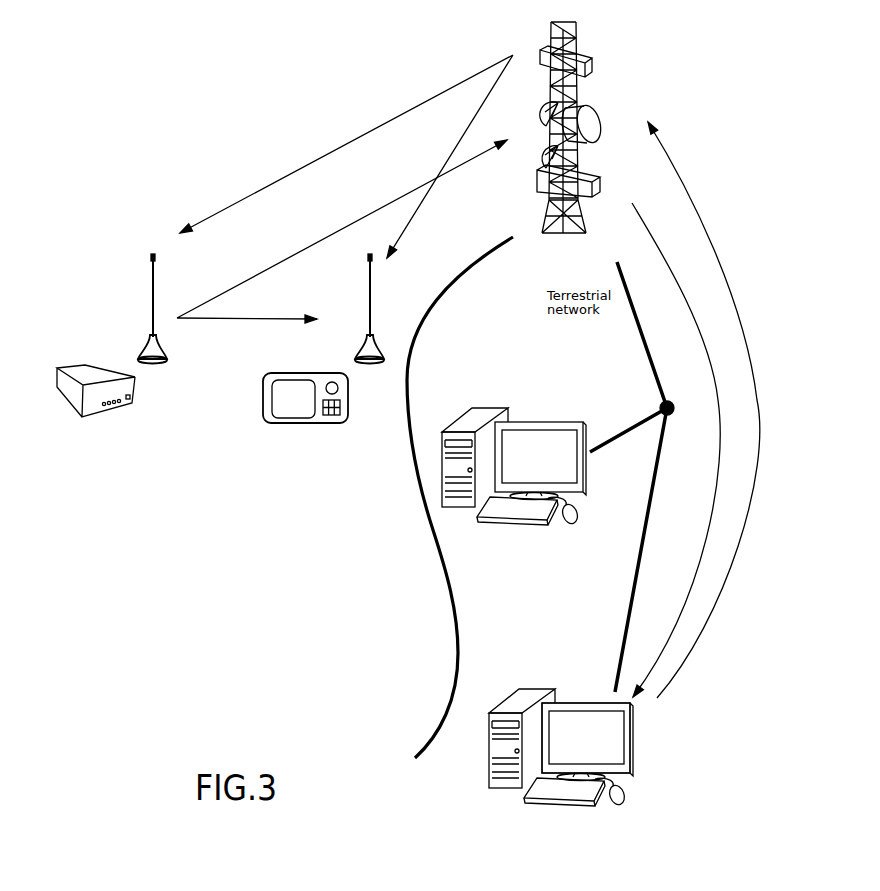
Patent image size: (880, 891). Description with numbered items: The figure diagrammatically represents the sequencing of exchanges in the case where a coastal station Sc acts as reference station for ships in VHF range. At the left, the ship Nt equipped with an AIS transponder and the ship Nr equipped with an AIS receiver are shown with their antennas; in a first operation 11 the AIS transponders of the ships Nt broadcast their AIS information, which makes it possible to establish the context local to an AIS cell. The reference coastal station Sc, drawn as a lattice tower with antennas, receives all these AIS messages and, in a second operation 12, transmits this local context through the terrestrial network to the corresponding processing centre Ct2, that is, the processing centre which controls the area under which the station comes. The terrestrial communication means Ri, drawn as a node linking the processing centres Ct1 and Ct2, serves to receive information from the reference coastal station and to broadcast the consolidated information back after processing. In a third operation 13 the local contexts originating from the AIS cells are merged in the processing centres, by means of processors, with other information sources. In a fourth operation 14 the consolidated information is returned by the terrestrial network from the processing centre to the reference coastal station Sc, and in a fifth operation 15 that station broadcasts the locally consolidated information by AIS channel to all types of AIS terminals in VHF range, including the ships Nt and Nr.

The AIS transponder broadcast step 11 is at (222, 318).
The local context transmission step 12 is at (653, 238).
The local context merging step 13 is at (645, 742).
The consolidated information return step 14 is at (700, 222).
The consolidated information broadcast step 15 is at (467, 130).
The reference coastal station Sc is at (598, 88).
The ship equipped with an AIS transponder Nt is at (88, 420).
The ship equipped with an AIS receiver Nr is at (293, 428).
The terrestrial communication means Ri is at (648, 358).
The processing centre Ct1 is at (538, 448).
The processing centre Ct2 is at (572, 722).